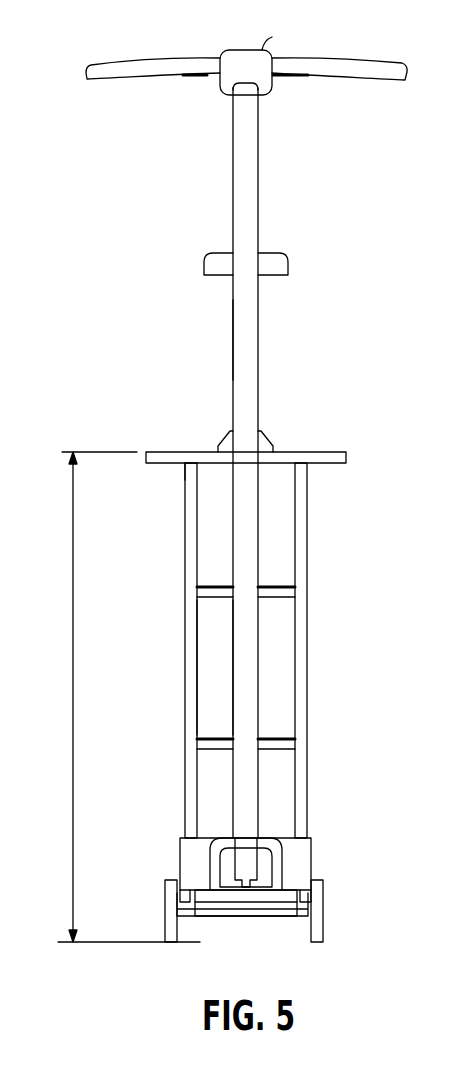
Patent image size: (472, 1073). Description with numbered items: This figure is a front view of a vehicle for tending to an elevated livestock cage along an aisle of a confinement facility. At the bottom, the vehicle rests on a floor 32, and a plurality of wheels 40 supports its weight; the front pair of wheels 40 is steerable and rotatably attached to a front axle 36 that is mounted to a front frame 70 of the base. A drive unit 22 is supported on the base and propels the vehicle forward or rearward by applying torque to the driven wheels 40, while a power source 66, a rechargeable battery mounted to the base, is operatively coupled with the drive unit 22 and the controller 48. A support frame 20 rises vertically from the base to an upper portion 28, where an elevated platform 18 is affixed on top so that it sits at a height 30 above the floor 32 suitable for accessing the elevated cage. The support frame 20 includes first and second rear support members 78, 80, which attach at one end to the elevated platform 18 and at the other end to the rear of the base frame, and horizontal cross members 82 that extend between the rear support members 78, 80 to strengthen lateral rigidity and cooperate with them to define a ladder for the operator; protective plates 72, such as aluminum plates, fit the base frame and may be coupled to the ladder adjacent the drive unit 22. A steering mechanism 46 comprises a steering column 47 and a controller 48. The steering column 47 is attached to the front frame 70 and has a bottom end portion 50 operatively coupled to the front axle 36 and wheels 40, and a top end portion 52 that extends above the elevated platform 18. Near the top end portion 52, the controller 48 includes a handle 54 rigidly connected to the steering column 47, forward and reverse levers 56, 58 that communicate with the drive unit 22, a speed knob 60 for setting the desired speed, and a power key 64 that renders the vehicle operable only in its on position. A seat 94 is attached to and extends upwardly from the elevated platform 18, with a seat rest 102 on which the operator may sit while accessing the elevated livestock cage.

The elevated platform 18 is at (331, 452).
The support frame 20 is at (218, 650).
The drive unit 22 is at (241, 874).
The upper portion 28 is at (183, 472).
The height 30 is at (72, 651).
The floor 32 is at (97, 940).
The front axle 36 is at (241, 917).
The wheels 40 is at (165, 894).
The steering mechanism 46 is at (223, 385).
The steering column 47 is at (232, 342).
The controller 48 is at (236, 55).
The bottom end portion 50 is at (258, 835).
The top end portion 52 is at (260, 104).
The handle 54 is at (101, 81).
The forward lever 56 is at (200, 78).
The reverse lever 58 is at (290, 78).
The speed knob 60 is at (241, 49).
The power key 64 is at (277, 35).
The power source 66 is at (312, 850).
The front frame 70 is at (212, 862).
The protective plates 72 is at (212, 735).
The first rear support member 78 is at (185, 694).
The second rear support member 80 is at (307, 693).
The horizontal cross members 82 is at (212, 598).
The seat 94 is at (285, 250).
The seat rest 102 is at (218, 252).